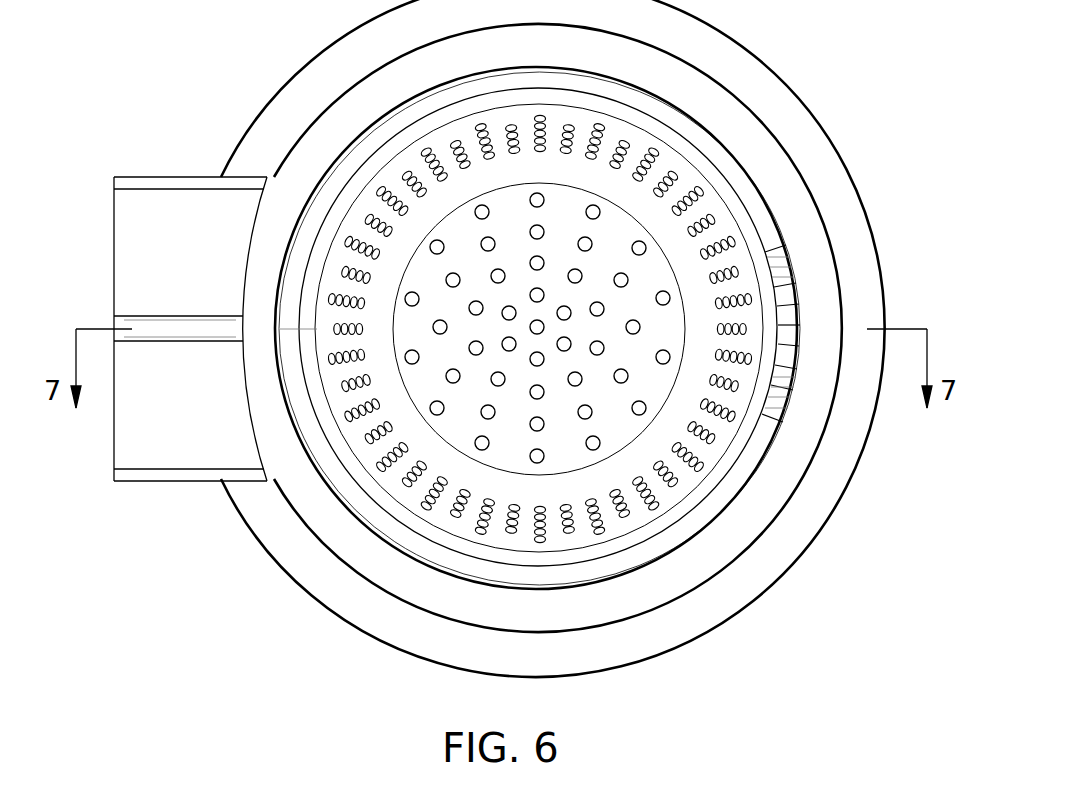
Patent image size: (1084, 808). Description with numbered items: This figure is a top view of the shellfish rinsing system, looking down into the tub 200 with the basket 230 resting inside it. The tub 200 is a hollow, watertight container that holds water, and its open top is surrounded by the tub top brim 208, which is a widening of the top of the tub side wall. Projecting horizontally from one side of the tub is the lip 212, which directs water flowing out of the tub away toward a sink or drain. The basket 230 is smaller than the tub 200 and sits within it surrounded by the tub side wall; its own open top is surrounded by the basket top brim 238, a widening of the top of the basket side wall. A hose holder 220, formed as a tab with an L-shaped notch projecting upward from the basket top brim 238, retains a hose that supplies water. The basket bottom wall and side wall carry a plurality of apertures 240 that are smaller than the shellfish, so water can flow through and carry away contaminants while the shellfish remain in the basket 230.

The tub 200 is at (790, 522).
The tub top brim 208 is at (290, 563).
The lip 212 is at (134, 422).
The hose holder 220 is at (793, 348).
The basket 230 is at (692, 528).
The basket top brim 238 is at (252, 238).
The plurality of apertures 240 is at (575, 276).